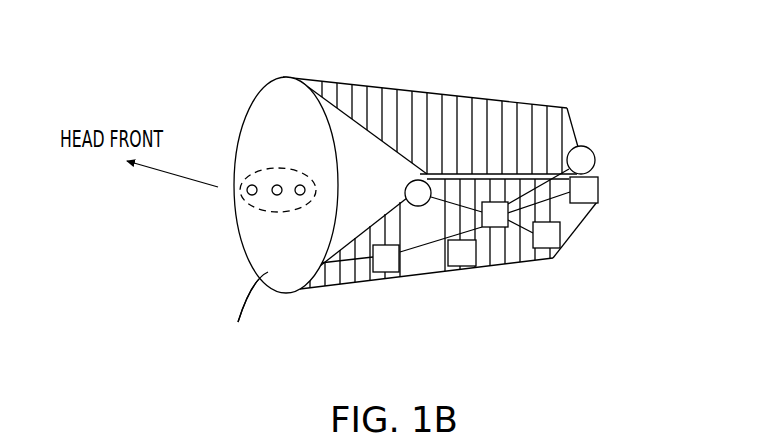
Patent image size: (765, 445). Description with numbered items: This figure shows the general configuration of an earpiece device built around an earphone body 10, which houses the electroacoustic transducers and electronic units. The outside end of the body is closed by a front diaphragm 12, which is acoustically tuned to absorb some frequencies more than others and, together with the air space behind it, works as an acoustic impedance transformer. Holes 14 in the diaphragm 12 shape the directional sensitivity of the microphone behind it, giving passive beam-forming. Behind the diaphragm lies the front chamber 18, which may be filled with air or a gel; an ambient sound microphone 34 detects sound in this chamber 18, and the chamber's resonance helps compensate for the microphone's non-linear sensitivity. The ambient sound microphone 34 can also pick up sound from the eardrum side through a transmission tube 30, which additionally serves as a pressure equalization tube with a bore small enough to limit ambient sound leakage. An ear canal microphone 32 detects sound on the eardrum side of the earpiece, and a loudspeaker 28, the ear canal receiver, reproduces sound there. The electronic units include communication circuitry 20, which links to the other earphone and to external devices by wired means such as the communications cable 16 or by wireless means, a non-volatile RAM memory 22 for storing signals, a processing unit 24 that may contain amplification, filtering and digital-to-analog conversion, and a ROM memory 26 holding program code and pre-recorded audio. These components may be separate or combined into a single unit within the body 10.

The earphone body 10 is at (372, 101).
The front diaphragm 12 is at (270, 125).
The holes 14 is at (264, 221).
The communications cable 16 is at (234, 302).
The front chamber 18 is at (379, 195).
The communication circuitry 20 is at (385, 270).
The memory 22 is at (461, 264).
The processing unit 24 is at (494, 226).
The memory 26 is at (553, 240).
The loudspeaker 28 is at (596, 202).
The transmission tube 30 is at (601, 175).
The ear canal microphone 32 is at (590, 149).
The ambient sound microphone 34 is at (418, 191).